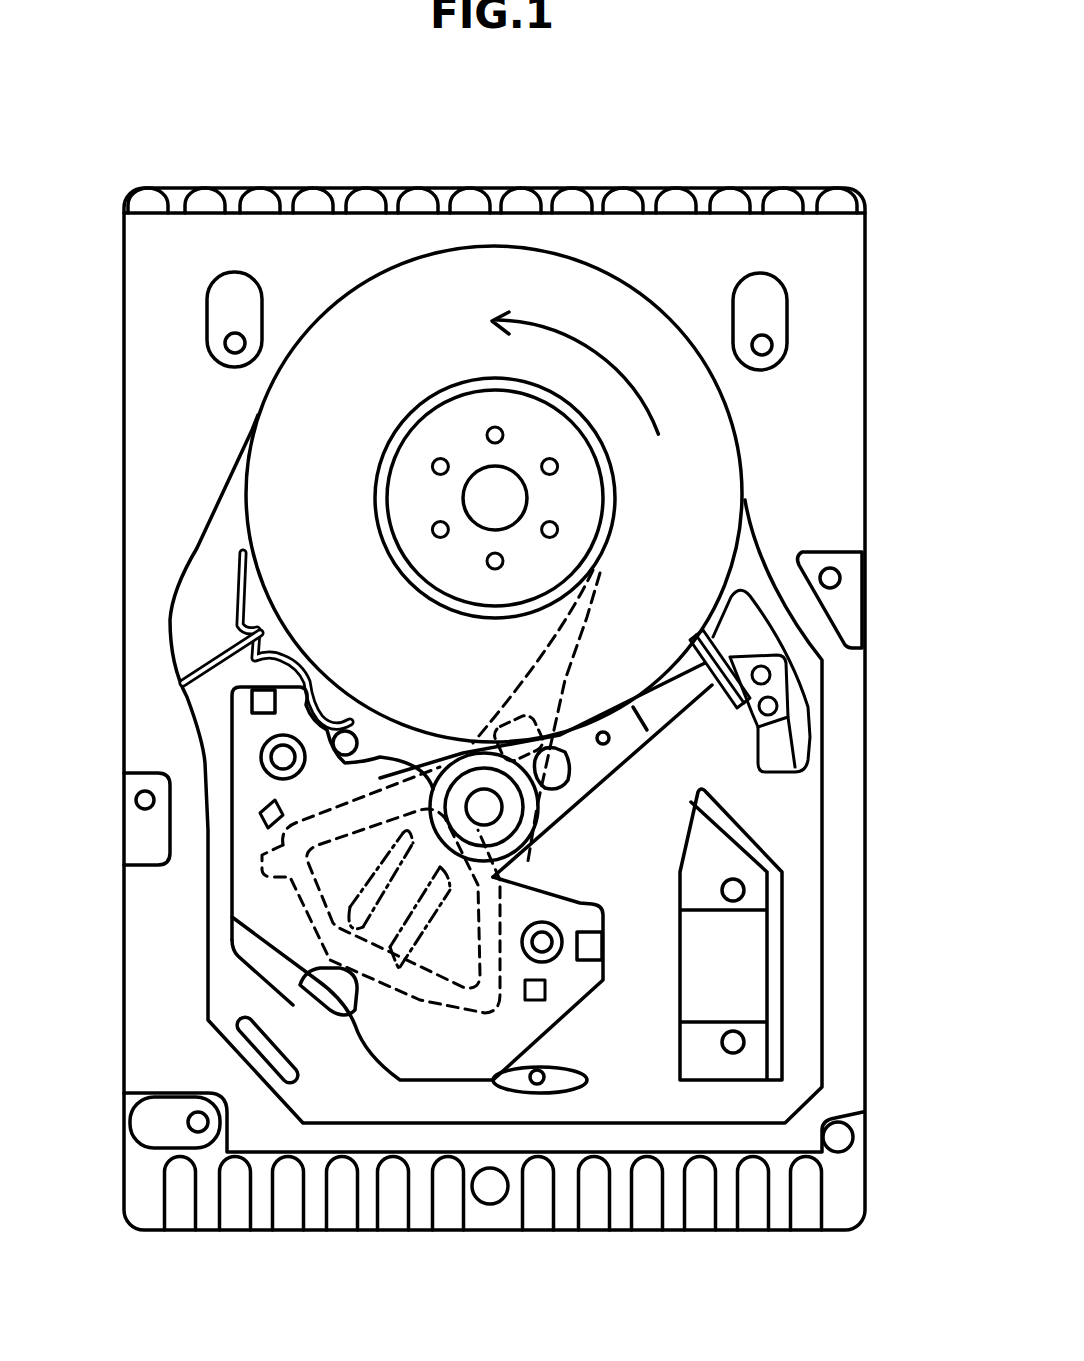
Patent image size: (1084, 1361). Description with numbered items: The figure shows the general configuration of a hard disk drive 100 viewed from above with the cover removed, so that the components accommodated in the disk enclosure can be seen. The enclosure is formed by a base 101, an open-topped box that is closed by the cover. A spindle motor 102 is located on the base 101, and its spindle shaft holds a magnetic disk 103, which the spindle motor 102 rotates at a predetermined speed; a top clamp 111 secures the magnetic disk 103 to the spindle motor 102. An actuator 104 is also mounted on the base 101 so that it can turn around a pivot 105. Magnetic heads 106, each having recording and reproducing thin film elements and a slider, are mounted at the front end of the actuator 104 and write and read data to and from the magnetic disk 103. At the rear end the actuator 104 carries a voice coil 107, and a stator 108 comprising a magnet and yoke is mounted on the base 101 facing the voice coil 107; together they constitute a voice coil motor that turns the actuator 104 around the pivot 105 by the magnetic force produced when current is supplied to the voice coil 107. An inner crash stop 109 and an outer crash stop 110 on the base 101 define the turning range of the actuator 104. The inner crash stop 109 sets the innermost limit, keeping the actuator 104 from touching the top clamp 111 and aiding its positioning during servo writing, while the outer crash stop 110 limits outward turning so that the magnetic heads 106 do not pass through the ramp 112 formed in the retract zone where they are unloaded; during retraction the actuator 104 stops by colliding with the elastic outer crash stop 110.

The hard disk drive 100 is at (920, 1331).
The base 101 is at (817, 450).
The spindle motor 102 is at (488, 498).
The magnetic disk 103 is at (300, 396).
The actuator 104 is at (487, 807).
The pivot 105 is at (567, 793).
The magnetic heads 106 is at (712, 690).
The voice coil 107 is at (300, 905).
The stator 108 is at (380, 1053).
The inner crash stop 109 is at (540, 1000).
The outer crash stop 110 is at (265, 803).
The top clamp 111 is at (606, 490).
The ramp 112 is at (722, 652).